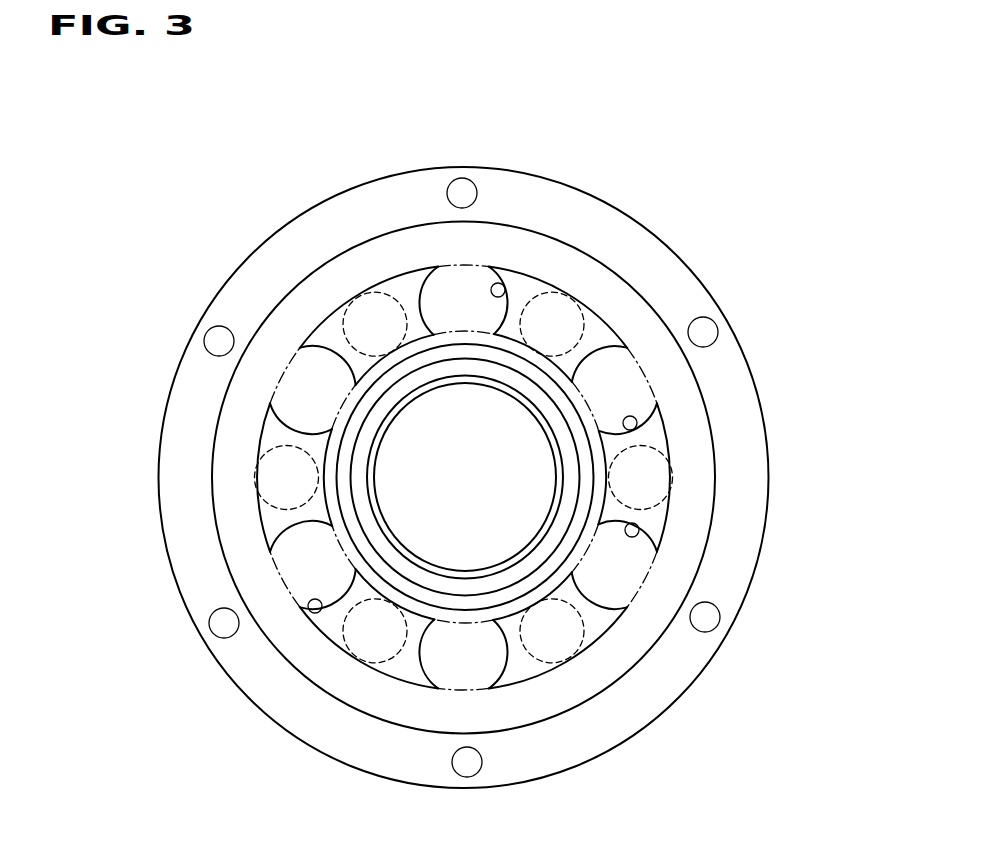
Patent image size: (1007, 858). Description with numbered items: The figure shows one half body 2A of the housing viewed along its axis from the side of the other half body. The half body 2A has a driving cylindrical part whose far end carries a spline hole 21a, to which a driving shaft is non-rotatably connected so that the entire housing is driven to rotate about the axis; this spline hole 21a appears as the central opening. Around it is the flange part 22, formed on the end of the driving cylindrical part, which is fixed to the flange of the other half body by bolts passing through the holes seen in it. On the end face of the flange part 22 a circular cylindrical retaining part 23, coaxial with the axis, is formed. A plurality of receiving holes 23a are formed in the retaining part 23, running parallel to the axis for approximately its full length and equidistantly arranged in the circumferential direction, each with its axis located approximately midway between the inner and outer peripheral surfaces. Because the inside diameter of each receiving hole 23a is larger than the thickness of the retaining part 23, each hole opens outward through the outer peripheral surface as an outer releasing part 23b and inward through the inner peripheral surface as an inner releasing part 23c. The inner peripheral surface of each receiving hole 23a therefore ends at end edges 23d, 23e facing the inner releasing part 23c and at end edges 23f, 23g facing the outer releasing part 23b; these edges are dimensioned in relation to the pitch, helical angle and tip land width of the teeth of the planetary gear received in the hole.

The half body 2A is at (631, 206).
The spline hole 21a is at (520, 553).
The flange part 22 is at (333, 202).
The retaining part 23 is at (620, 335).
The receiving hole 23a is at (508, 262).
The outer releasing part 23b is at (462, 265).
The inner releasing part 23c is at (462, 322).
The end edge 23d is at (598, 426).
The end edge 23e is at (600, 358).
The end edge 23f is at (655, 405).
The end edge 23g is at (640, 360).